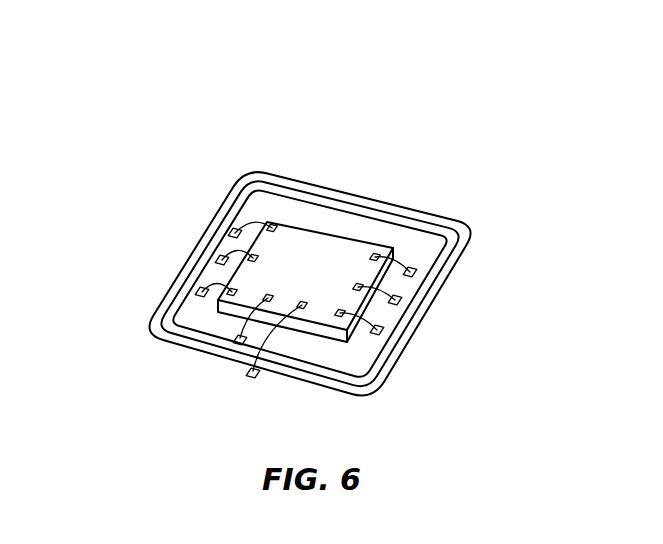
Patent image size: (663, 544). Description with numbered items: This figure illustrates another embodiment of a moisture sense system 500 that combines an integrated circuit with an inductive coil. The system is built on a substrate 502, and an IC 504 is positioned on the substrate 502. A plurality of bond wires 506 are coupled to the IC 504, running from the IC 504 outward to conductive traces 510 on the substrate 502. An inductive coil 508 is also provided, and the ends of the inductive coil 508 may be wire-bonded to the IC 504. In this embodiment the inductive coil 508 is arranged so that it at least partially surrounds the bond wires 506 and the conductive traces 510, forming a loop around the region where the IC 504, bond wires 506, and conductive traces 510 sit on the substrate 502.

The moisture sense system 500 is at (453, 104).
The substrate 502 is at (382, 234).
The IC 504 is at (305, 260).
The bond wires 506 is at (273, 334).
The inductive coil 508 is at (470, 222).
The conductive traces 510 is at (235, 233).